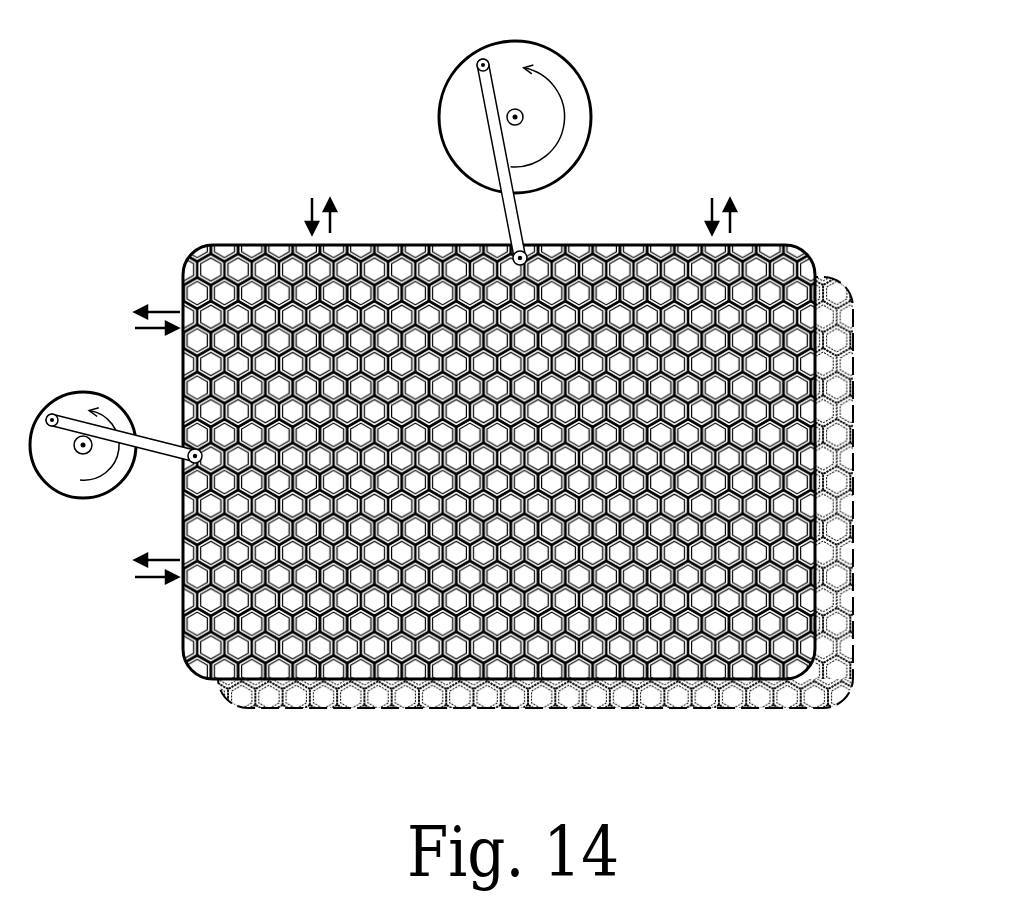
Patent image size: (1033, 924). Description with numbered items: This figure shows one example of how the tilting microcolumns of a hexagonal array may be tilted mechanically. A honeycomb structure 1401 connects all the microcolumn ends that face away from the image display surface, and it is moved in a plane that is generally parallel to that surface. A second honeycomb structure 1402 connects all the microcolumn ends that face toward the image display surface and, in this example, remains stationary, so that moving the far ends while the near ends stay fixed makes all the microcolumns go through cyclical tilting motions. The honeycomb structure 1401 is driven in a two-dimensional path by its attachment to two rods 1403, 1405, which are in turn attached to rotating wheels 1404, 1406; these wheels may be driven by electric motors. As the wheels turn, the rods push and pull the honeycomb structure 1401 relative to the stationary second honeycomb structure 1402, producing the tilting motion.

The honeycomb structure 1401 is at (520, 478).
The second honeycomb structure 1402 is at (778, 693).
The rod 1403 is at (513, 225).
The rotating wheel 1404 is at (554, 73).
The rod 1405 is at (158, 443).
The rotating wheel 1406 is at (67, 395).